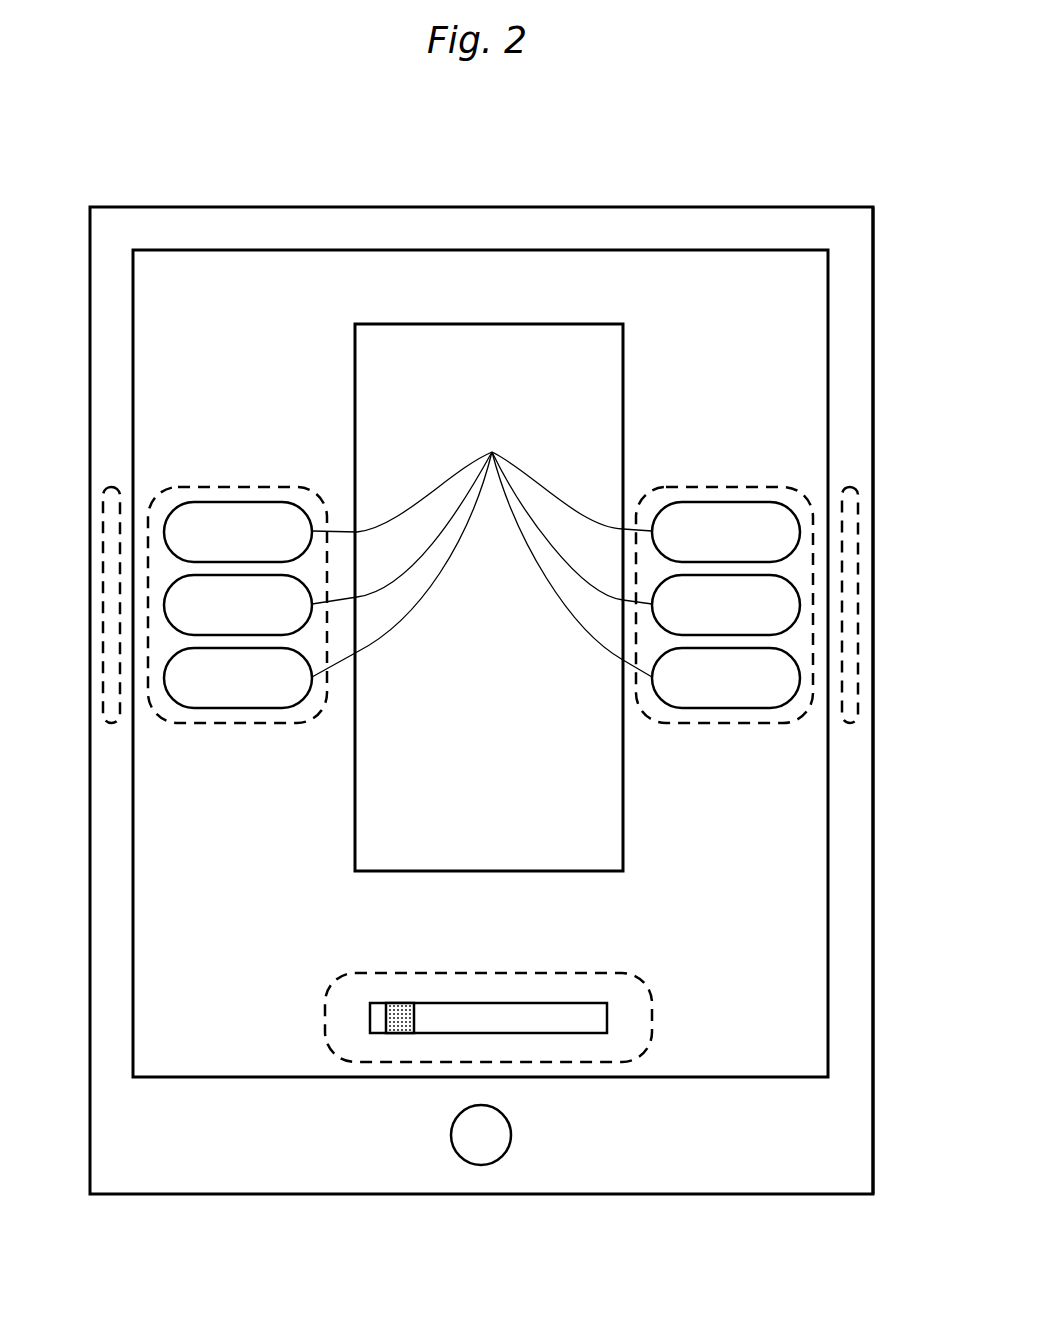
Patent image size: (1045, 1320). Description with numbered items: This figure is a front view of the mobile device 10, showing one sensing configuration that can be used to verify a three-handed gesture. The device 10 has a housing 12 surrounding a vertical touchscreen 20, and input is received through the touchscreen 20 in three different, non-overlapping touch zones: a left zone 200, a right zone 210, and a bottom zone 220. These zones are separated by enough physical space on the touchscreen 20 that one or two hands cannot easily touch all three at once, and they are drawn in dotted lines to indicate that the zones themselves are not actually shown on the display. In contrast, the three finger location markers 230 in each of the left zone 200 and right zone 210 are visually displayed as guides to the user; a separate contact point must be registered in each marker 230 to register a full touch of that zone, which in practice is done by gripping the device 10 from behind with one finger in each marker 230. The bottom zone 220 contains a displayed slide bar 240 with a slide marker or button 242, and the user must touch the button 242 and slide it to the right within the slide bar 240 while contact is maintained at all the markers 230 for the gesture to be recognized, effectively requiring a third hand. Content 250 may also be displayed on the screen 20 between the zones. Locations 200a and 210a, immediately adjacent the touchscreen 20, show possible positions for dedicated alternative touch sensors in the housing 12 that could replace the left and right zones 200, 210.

The mobile device 10 is at (700, 207).
The housing 12 is at (873, 339).
The touchscreen 20 is at (302, 250).
The left touch zone 200 is at (258, 487).
The alternative touch sensor location 200a is at (103, 576).
The right touch zone 210 is at (681, 487).
The alternative touch sensor location 210a is at (873, 576).
The bottom touch zone 220 is at (362, 973).
The finger location markers 230 is at (482, 552).
The slide bar 240 is at (503, 1003).
The slide marker or button 242 is at (400, 1003).
The content 250 is at (591, 324).